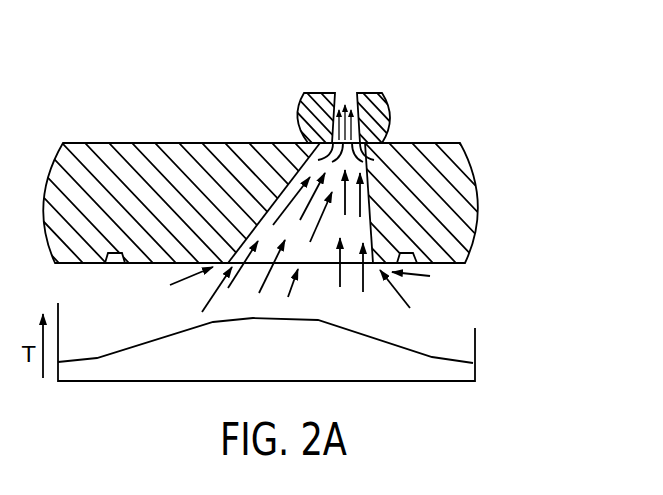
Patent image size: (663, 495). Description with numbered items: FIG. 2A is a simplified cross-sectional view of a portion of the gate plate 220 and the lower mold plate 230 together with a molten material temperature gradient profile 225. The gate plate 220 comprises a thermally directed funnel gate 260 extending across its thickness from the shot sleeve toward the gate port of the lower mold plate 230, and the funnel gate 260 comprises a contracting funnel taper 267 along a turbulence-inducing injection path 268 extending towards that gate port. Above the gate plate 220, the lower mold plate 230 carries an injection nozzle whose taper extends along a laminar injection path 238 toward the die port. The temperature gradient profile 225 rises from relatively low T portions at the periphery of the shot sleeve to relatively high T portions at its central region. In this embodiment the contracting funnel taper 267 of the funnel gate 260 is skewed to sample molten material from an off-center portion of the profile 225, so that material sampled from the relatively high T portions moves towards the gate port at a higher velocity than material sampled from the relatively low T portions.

The gate plate 220 is at (463, 211).
The lower mold plate 230 is at (360, 117).
The laminar injection path 238 is at (333, 124).
The thermally directed funnel gate 260 is at (276, 230).
The contracting funnel taper 267 is at (277, 200).
The turbulence-inducing injection path 268 is at (323, 213).
The temperature gradient profile 225 is at (435, 357).